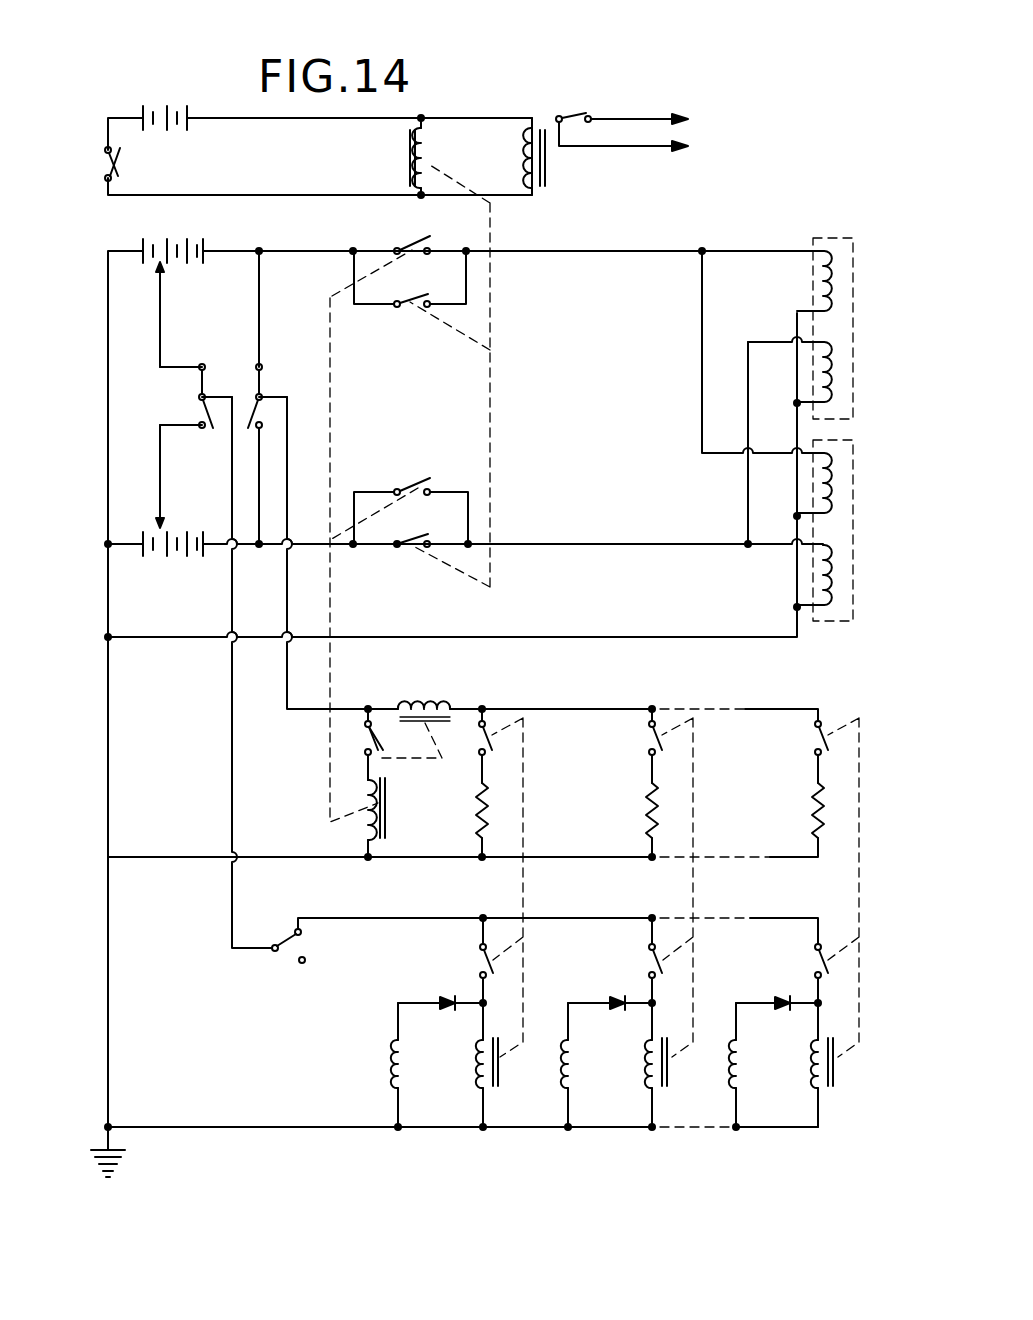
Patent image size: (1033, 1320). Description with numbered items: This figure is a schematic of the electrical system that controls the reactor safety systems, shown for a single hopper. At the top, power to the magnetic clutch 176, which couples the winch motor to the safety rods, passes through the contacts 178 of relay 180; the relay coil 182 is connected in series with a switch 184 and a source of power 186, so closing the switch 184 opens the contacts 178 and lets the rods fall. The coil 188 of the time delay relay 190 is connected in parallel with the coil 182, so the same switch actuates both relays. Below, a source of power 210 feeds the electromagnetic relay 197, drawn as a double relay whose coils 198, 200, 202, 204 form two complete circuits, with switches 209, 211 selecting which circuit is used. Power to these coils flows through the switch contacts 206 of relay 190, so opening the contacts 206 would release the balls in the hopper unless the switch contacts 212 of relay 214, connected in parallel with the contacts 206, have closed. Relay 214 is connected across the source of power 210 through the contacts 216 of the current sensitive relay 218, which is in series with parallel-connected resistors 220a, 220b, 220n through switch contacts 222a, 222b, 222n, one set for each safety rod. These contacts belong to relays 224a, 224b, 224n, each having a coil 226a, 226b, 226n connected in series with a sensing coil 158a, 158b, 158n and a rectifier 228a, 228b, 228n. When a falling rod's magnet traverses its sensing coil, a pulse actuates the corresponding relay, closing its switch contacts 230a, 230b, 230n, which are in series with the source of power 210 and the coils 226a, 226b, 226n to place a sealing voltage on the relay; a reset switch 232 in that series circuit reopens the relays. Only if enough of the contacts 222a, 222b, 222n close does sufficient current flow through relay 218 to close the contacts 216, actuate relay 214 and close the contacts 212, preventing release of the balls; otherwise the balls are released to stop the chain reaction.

The switch 184 is at (100, 170).
The source of power 186 is at (168, 112).
The coil of relay 190 188 is at (428, 152).
The time delay relay 190 is at (401, 158).
The relay coil 182 is at (524, 158).
The relay 180 is at (548, 164).
The contacts 178 is at (586, 102).
The magnetic clutch 176 is at (704, 144).
The source of power 210 is at (184, 262).
The switch 209 is at (210, 386).
The switch 211 is at (270, 390).
The switch contacts 212 is at (418, 252).
The switch contacts 206 is at (404, 312).
The coil 198 is at (836, 268).
The coil 200 is at (836, 360).
The coil 202 is at (836, 490).
The coil 204 is at (836, 586).
The electromagnetic relay 197 is at (855, 440).
The current sensitive relay 218 is at (434, 686).
The contacts 216 is at (362, 740).
The relay 214 is at (388, 800).
The switch contacts 222a is at (494, 706).
The switch contacts 222b is at (648, 740).
The switch contacts 222n is at (812, 740).
The resistor 220a is at (480, 812).
The resistor 220b is at (646, 806).
The resistor 220n is at (812, 806).
The reset switch 232 is at (280, 956).
The switch contacts 230a is at (478, 958).
The switch contacts 230b is at (648, 948).
The switch contacts 230n is at (810, 948).
The rectifier 228a is at (444, 998).
The rectifier 228b is at (614, 998).
The rectifier 228n is at (782, 998).
The coil 226a is at (476, 1046).
The coil 226b is at (646, 1046).
The coil 226n is at (812, 1046).
The relay 224a is at (484, 1070).
The relay 224b is at (654, 1070).
The relay 224n is at (820, 1070).
The coil 158a is at (392, 1064).
The coil 158b is at (562, 1072).
The coil 158n is at (730, 1072).